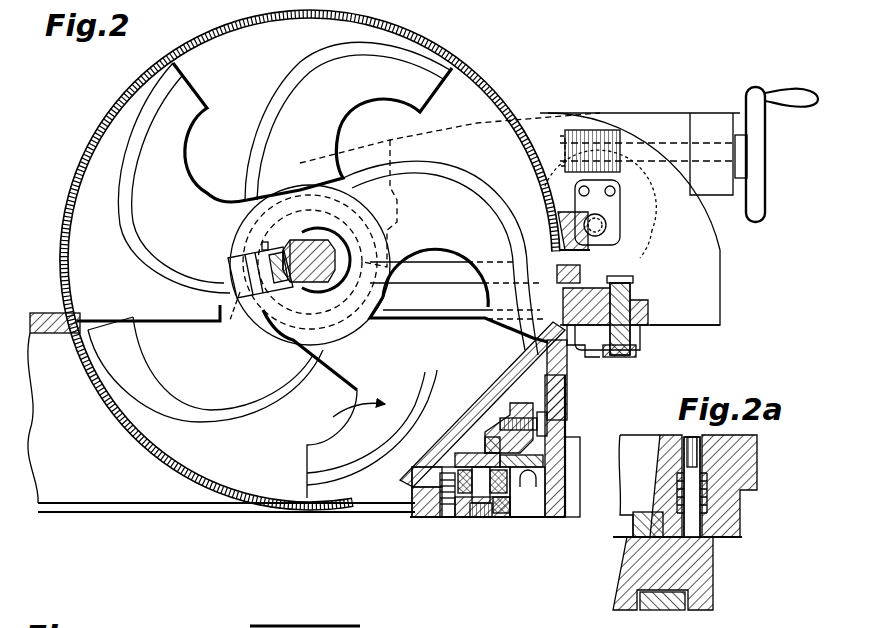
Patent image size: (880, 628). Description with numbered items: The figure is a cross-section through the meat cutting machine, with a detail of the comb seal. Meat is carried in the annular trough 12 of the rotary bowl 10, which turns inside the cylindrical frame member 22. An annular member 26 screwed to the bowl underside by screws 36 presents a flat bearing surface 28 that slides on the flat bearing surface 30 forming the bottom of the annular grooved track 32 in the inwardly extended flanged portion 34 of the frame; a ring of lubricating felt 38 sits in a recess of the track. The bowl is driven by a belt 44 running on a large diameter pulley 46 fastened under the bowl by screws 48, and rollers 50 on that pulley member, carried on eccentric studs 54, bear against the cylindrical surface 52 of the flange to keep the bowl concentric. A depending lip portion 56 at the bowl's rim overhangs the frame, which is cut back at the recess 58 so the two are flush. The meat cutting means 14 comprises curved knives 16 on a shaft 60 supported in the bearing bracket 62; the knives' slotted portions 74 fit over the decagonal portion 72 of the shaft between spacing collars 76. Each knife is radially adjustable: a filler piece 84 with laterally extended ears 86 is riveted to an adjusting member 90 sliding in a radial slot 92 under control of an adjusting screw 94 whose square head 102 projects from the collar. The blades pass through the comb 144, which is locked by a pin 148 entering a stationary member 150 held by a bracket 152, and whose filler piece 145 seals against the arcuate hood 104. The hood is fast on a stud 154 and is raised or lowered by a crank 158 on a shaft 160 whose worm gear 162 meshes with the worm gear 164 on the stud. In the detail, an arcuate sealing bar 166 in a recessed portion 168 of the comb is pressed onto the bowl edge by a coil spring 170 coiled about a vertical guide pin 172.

In FIG. 2, the rotary bowl 10 is at (360, 518).
In FIG. 2, the annular trough 12 is at (215, 478).
In FIG. 2, the meat cutting means 14 is at (104, 104).
In FIG. 2, the knives 16 is at (300, 77).
In FIG. 2, the cylindrical frame member 22 is at (580, 455).
In FIG. 2, the annular member 26 is at (488, 423).
In FIG. 2, the flat bearing surface 28 is at (545, 440).
In FIG. 2, the flat bearing surface 30 is at (468, 520).
In FIG. 2, the annular grooved track 32 is at (490, 447).
In FIG. 2, the inwardly extended flanged portion 34 is at (485, 450).
In FIG. 2, the screws 36 is at (547, 417).
In FIG. 2, the ring of lubricating felt 38 is at (547, 470).
In FIG. 2, the belt 44 is at (503, 520).
In FIG. 2, the large diameter pulley 46 is at (501, 520).
In FIG. 2, the screws 48 is at (447, 520).
In FIG. 2, the rollers 50 is at (462, 475).
In FIG. 2, the cylindrical surface 52 is at (547, 492).
In FIG. 2, the eccentric studs 54 is at (484, 520).
In FIG. 2, the depending lip portion 56 is at (583, 354).
In FIG. 2, the recess 58 is at (548, 345).
In FIG. 2, the shaft 60 is at (310, 240).
In FIG. 2, the bearing bracket 62 is at (471, 126).
In FIG. 2, the decagonal portion 72 is at (316, 283).
In FIG. 2, the slotted portions 74 is at (306, 292).
In FIG. 2, the spacing collars 76 is at (403, 216).
In FIG. 2, the filler piece 84 is at (236, 270).
In FIG. 2, the laterally extended ears 86 is at (276, 295).
In FIG. 2, the adjusting member 90 is at (242, 252).
In FIG. 2, the radial slot 92 is at (269, 330).
In FIG. 2, the adjusting screw 94 is at (244, 315).
In FIG. 2, the square head 102 is at (230, 300).
In FIG. 2, the arcuate hood 104 is at (428, 52).
In FIG. 2, the comb 144 is at (399, 322).
In FIG. 2, the filler piece 145 is at (600, 249).
In FIG. 2, the pin 148 is at (648, 320).
In FIG. 2, the stationary member 150 is at (641, 336).
In FIG. 2, the bracket 152 is at (638, 355).
In FIG. 2, the stud 154 is at (606, 222).
In FIG. 2, the crank 158 is at (754, 93).
In FIG. 2, the shaft 160 is at (703, 147).
In FIG. 2, the worm gear 162 is at (595, 150).
In FIG. 2, the worm gear 164 is at (655, 235).
In FIG. 2A, the sealing bar 166 is at (737, 517).
In FIG. 2A, the recessed portion 168 is at (743, 534).
In FIG. 2A, the coil spring 170 is at (703, 490).
In FIG. 2A, the vertical guide pin 172 is at (697, 460).